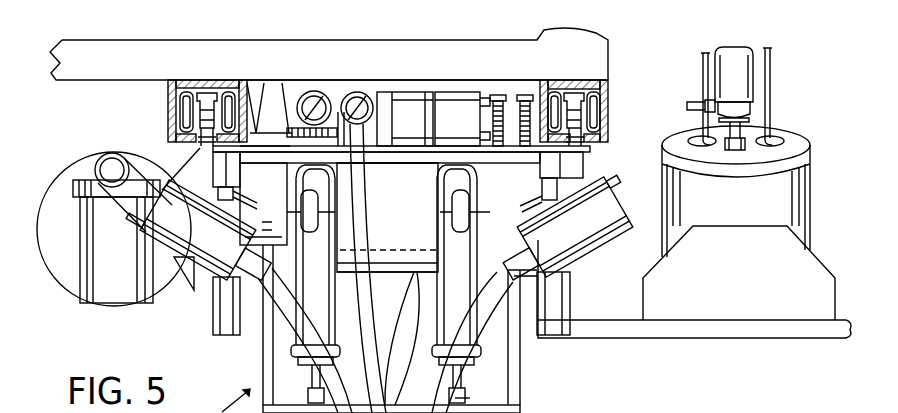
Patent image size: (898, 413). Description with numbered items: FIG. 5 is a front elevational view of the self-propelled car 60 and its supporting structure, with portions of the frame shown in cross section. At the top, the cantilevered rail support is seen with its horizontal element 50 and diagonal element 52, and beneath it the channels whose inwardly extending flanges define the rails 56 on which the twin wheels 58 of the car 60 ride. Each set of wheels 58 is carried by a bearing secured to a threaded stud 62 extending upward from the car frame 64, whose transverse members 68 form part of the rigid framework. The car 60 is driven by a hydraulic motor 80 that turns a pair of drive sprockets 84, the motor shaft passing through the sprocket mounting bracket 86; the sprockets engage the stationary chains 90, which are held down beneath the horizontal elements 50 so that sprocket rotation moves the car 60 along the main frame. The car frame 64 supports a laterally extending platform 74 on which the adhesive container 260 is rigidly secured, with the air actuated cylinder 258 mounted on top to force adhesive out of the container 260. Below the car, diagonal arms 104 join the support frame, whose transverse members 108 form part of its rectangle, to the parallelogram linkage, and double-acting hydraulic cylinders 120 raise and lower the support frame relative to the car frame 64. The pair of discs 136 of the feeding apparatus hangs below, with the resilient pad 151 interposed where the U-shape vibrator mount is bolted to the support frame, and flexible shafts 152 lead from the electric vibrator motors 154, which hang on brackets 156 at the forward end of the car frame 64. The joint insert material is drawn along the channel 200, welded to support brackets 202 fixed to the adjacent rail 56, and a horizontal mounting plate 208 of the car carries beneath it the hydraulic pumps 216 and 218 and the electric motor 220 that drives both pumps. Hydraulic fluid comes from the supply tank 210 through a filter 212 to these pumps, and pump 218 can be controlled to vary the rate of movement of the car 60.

The horizontal element 50 is at (393, 65).
The diagonal element 52 is at (600, 34).
The rail 56 is at (220, 82).
The wheels 58 is at (223, 107).
The self-propelled car 60 is at (592, 338).
The threaded stud 62 is at (198, 141).
The car frame 64 is at (263, 144).
The transverse members 68 is at (402, 164).
The platform 74 is at (607, 320).
The hydraulic motor 80 is at (407, 92).
The drive sprockets 84 is at (503, 96).
The sprocket mounting bracket 86 is at (478, 119).
The stationary chains 90 is at (528, 95).
The diagonal arms 104 is at (263, 376).
The transverse members 108 is at (522, 410).
The double-acting hydraulic cylinders 120 is at (450, 247).
The discs 136 is at (408, 298).
The resilient pad 151 is at (477, 397).
The flexible shafts 152 is at (272, 340).
The electric vibrator motors 154 is at (384, 233).
The brackets 156 is at (200, 206).
The channel 200 is at (302, 92).
The support brackets 202 is at (250, 83).
The mounting plate 208 is at (281, 163).
The supply tank 210 is at (78, 168).
The filter 212 is at (100, 292).
The hydraulic pump 216 is at (297, 284).
The hydraulic pump 218 is at (476, 284).
The electric motor 220 is at (387, 193).
The air actuated cylinder 258 is at (742, 80).
The container 260 is at (780, 198).